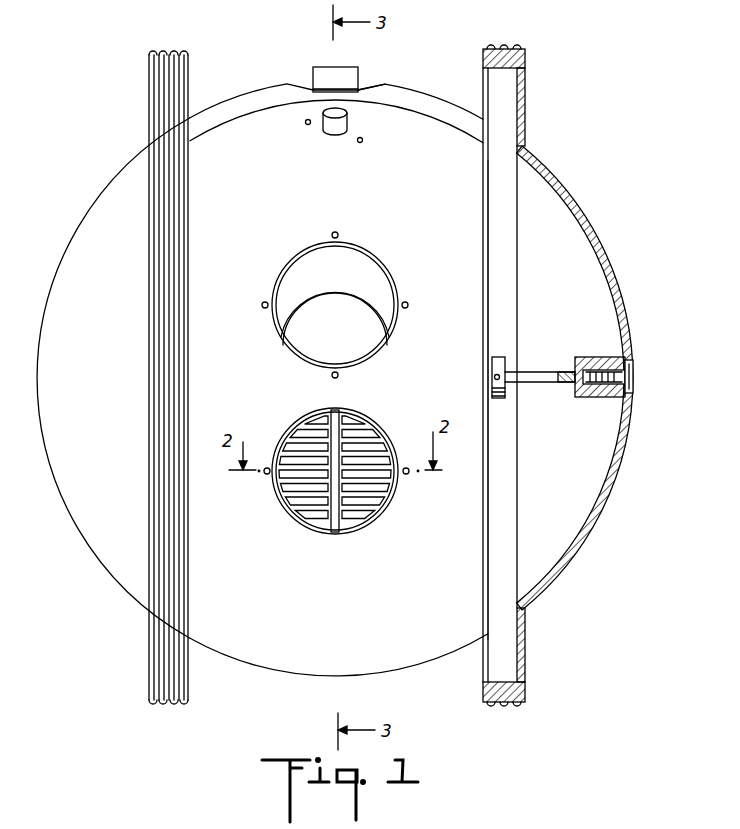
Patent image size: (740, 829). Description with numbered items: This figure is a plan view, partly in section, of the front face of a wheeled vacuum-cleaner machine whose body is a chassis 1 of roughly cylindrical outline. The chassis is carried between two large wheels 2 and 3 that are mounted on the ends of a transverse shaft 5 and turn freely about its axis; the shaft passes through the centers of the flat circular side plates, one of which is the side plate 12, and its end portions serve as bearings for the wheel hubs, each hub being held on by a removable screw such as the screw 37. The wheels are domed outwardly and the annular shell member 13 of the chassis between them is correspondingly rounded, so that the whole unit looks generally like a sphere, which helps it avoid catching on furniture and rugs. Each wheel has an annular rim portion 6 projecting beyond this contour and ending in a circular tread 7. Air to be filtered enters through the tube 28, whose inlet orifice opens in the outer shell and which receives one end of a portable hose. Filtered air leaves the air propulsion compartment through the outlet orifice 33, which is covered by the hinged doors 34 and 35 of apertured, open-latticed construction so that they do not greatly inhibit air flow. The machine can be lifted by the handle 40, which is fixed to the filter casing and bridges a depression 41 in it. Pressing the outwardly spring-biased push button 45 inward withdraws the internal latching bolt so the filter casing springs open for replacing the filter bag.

The chassis 1 is at (263, 657).
The wheel 2 is at (100, 553).
The wheel 3 is at (587, 542).
The transverse shaft 5 is at (537, 376).
The annular rim portion 6 is at (527, 97).
The circular tread 7 is at (167, 53).
The side plate 12 is at (490, 505).
The shell member 13 is at (441, 95).
The tube 28 is at (348, 270).
The outlet orifice 33 is at (309, 432).
The hinged door 34 is at (305, 507).
The hinged door 35 is at (350, 487).
The screw 37 is at (634, 383).
The handle 40 is at (340, 72).
The depression 41 is at (372, 85).
The push button 45 is at (347, 115).